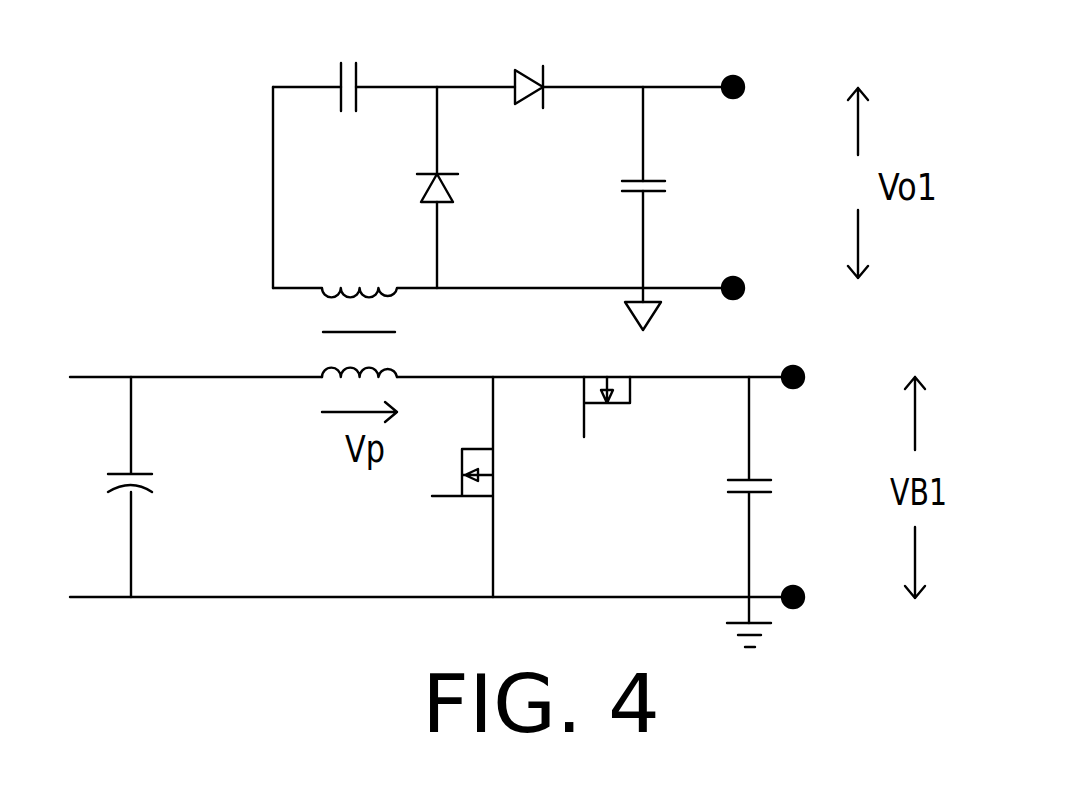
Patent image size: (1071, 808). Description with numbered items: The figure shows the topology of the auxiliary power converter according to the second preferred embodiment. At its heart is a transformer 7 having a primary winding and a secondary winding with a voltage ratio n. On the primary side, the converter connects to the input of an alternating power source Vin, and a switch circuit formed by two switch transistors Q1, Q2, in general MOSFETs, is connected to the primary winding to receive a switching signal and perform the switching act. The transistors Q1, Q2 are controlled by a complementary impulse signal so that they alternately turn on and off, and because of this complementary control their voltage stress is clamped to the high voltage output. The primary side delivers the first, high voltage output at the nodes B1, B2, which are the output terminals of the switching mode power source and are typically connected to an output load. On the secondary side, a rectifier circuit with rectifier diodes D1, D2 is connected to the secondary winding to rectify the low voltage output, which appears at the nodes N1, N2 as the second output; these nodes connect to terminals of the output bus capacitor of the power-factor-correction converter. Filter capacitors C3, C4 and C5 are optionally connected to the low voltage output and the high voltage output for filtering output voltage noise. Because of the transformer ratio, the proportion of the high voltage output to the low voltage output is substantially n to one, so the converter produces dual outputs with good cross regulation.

The transformer 7 is at (288, 320).
The capacitor C3 is at (351, 63).
The rectifier diode D1 is at (462, 199).
The rectifier diode D2 is at (532, 113).
The capacitor C4 is at (669, 197).
The node N1 is at (762, 52).
The node N2 is at (766, 266).
The alternating power source Vin is at (90, 487).
The switch transistor Q1 is at (492, 487).
The switch transistor Q2 is at (609, 428).
The capacitor C5 is at (776, 512).
The node B1 is at (823, 350).
The node B2 is at (821, 597).